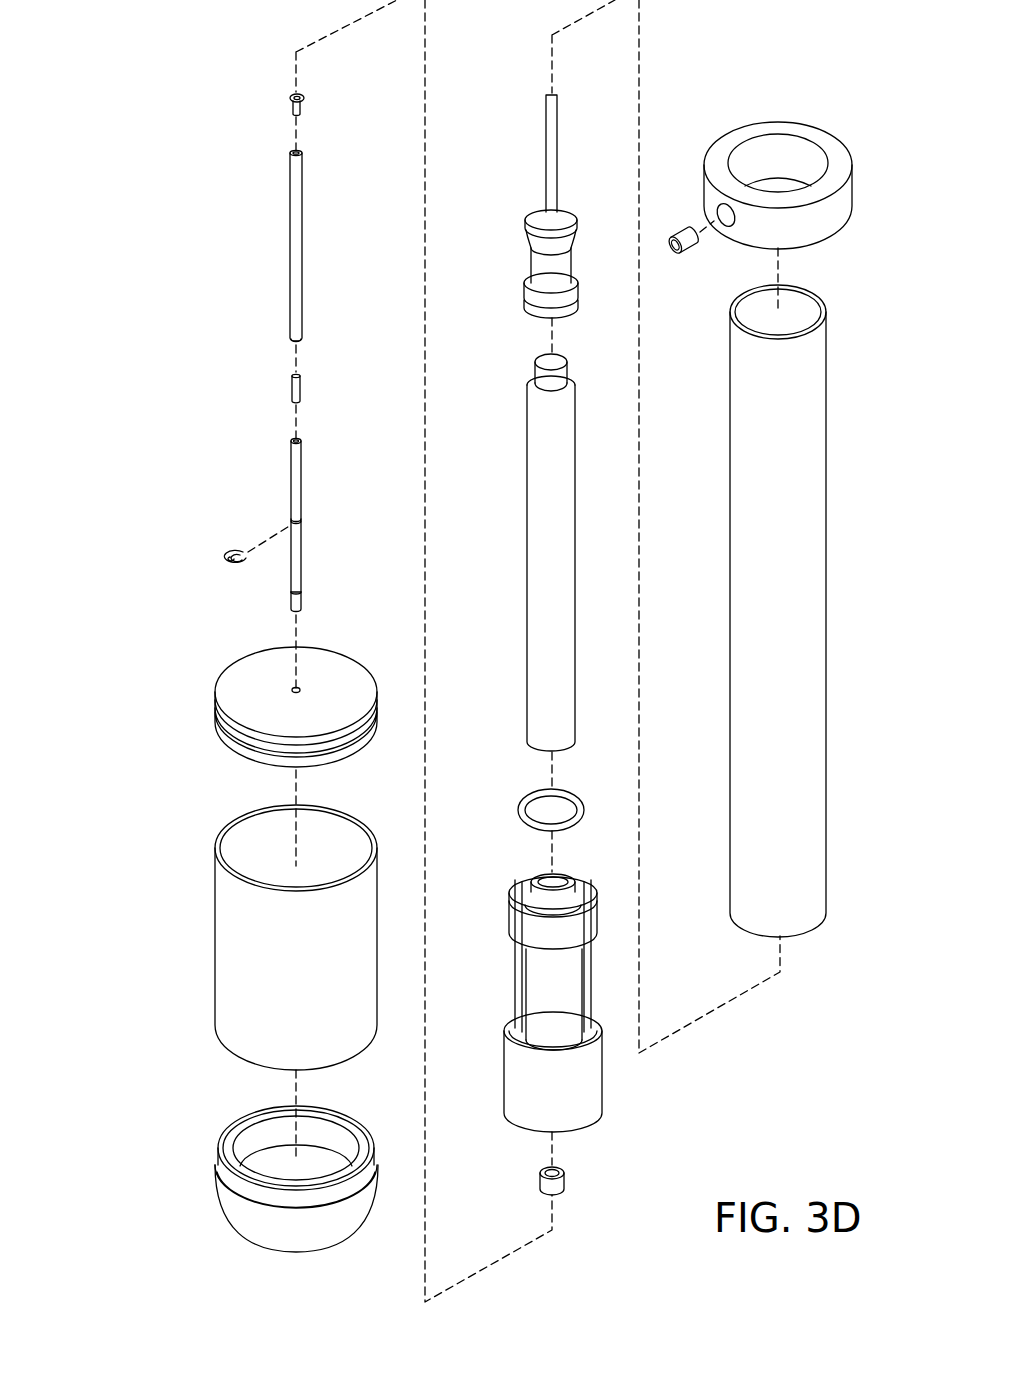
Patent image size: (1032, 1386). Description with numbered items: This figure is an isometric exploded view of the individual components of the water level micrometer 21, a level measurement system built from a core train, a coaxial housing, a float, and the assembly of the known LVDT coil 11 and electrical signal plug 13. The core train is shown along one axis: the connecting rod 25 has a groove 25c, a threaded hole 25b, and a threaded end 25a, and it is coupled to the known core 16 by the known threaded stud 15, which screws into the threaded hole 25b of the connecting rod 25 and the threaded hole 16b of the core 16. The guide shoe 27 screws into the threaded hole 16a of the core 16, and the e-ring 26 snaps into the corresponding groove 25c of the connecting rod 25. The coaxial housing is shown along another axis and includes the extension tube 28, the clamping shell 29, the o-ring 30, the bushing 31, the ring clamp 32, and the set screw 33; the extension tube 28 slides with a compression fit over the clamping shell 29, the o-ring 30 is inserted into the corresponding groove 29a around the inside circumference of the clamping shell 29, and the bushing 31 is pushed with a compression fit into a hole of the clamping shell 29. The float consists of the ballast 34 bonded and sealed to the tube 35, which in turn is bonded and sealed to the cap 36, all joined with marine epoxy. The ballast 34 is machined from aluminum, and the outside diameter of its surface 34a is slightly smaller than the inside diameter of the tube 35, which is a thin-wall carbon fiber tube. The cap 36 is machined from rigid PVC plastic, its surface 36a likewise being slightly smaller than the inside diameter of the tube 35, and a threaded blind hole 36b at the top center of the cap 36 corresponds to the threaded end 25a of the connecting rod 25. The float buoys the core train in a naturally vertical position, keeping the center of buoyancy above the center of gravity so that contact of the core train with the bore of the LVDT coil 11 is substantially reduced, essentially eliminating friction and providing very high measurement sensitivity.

The LVDT coil 11 is at (528, 566).
The electrical signal plug 13 is at (531, 262).
The threaded stud 15 is at (292, 390).
The core 16 is at (291, 245).
The threaded hole 16a is at (294, 339).
The threaded hole 16b is at (292, 153).
The water level micrometer 21 is at (134, 1216).
The connecting rod 25 is at (291, 478).
The threaded end 25a is at (291, 600).
The threaded hole 25b is at (292, 440).
The groove 25c is at (291, 520).
The e-ring 26 is at (224, 557).
The guide shoe 27 is at (290, 99).
The extension tube 28 is at (733, 616).
The clamping shell 29 is at (512, 1078).
The groove 29a is at (535, 881).
The o-ring 30 is at (519, 812).
The bushing 31 is at (540, 1185).
The ring clamp 32 is at (738, 134).
The set screw 33 is at (690, 255).
The ballast 34 is at (230, 1205).
The surface 34a is at (223, 1163).
The tube 35 is at (216, 953).
The cap 36 is at (240, 663).
The surface 36a is at (222, 725).
The threaded blind hole 36b is at (292, 690).